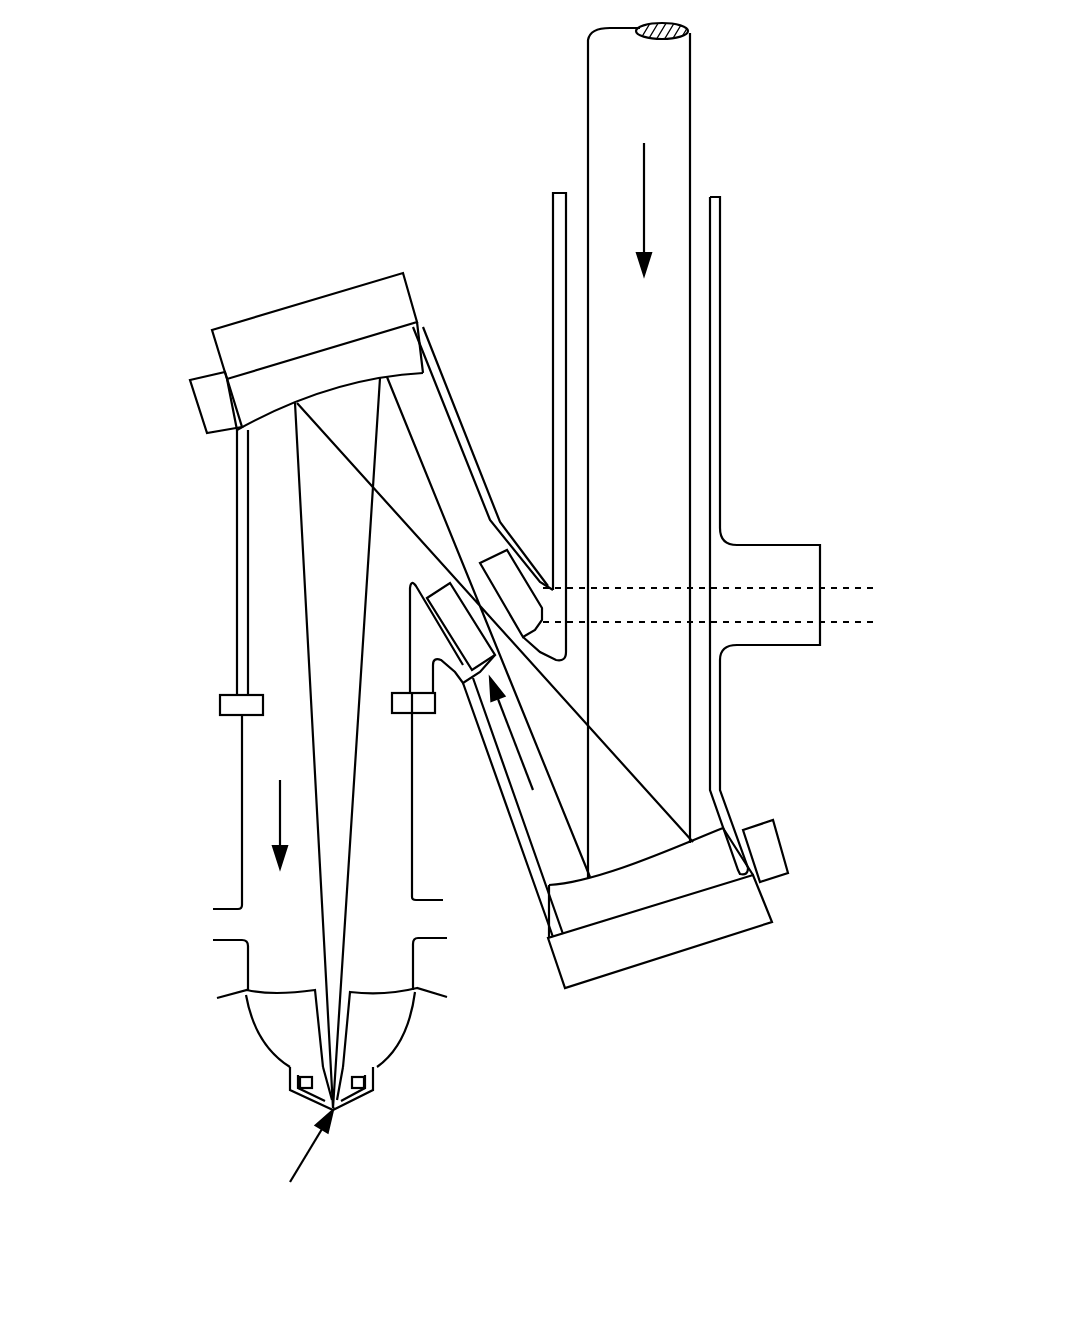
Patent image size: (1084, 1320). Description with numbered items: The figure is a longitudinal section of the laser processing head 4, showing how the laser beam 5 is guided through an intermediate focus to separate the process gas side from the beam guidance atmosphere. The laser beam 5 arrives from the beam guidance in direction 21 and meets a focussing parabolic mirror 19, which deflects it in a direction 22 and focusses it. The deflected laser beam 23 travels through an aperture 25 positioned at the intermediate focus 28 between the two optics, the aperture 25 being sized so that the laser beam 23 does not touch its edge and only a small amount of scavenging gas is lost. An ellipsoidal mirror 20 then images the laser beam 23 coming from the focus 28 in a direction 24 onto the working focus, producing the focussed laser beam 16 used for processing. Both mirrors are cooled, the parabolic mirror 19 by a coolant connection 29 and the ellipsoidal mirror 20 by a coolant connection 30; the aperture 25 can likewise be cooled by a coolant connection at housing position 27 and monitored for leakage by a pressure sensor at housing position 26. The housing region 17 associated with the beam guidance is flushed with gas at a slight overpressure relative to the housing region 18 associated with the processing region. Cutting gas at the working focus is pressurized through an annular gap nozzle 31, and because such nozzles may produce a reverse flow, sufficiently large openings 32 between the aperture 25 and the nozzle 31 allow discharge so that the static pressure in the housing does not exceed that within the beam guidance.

The laser processing head 4 is at (290, 269).
The laser beam 5 is at (660, 408).
The focussed laser beam 16 is at (330, 643).
The housing region 17 is at (710, 283).
The housing region 18 is at (245, 586).
The focussing parabolic mirror 19 is at (660, 892).
The ellipsoidal mirror 20 is at (280, 375).
The direction 21 is at (624, 209).
The direction 22 is at (503, 717).
The laser beam 23 is at (565, 765).
The direction 24 is at (262, 822).
The aperture 25 is at (477, 625).
The housing position 26 is at (732, 622).
The housing position 27 is at (732, 573).
The intermediate focus 28 is at (460, 608).
The coolant connection 29 is at (765, 852).
The coolant connection 30 is at (217, 405).
The annular gap nozzle 31 is at (290, 1072).
The openings 32 is at (408, 923).